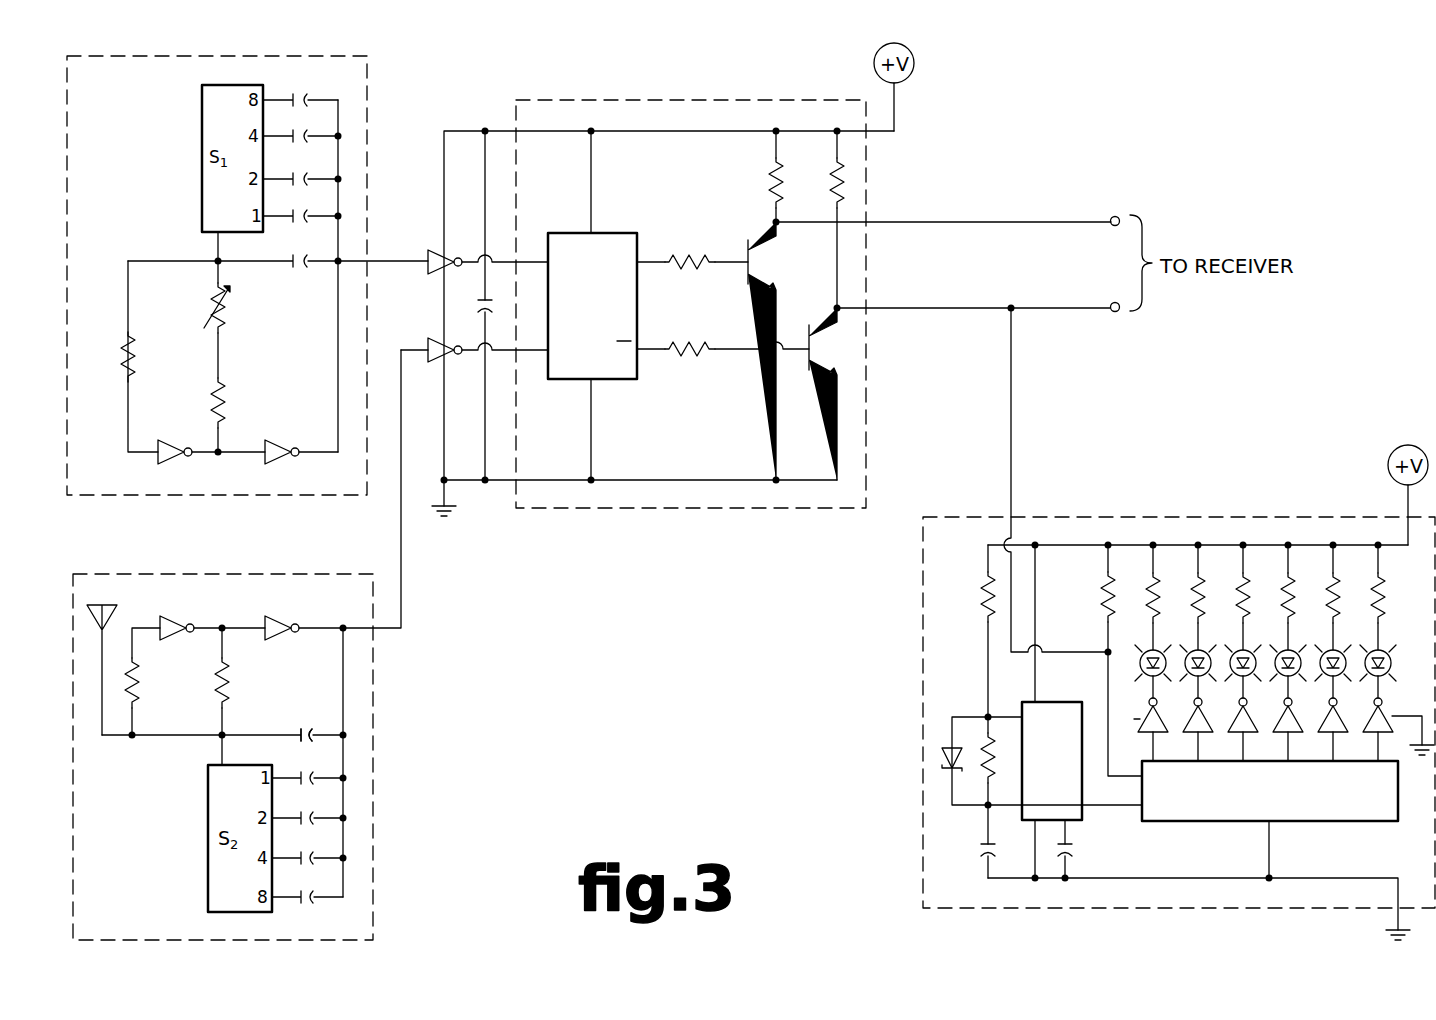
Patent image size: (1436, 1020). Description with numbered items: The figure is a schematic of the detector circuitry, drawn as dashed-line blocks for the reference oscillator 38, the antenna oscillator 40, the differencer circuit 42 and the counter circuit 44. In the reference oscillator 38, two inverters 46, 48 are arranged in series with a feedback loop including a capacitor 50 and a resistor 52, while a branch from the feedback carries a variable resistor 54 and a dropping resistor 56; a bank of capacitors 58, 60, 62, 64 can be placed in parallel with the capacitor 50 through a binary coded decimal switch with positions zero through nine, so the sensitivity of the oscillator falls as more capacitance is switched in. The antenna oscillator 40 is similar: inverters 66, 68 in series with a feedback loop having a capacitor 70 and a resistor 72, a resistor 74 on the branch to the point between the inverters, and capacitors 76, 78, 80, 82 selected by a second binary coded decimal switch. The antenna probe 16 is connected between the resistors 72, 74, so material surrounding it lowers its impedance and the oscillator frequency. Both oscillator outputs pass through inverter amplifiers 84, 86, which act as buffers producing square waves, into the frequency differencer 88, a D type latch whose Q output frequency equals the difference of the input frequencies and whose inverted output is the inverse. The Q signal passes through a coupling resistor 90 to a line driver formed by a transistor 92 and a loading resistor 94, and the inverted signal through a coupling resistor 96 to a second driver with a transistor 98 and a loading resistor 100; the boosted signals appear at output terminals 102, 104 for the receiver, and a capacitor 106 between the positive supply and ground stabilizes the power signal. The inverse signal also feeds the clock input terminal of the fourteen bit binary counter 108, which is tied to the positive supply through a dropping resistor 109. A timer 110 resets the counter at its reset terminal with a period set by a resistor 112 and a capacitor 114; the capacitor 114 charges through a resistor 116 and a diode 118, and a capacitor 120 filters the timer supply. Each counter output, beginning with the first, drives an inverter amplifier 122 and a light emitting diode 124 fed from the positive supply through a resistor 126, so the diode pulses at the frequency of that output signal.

The antenna probe 16 is at (112, 616).
The reference oscillator 38 is at (367, 100).
The antenna oscillator 40 is at (376, 894).
The differencer circuit 42 is at (702, 508).
The counter circuit 44 is at (922, 630).
The inverter 46 is at (164, 446).
The inverter 48 is at (283, 444).
The capacitor 50 is at (306, 269).
The resistor 52 is at (130, 355).
The variable resistor 54 is at (224, 311).
The dropping resistor 56 is at (221, 391).
The capacitor 58 is at (306, 222).
The capacitor 60 is at (310, 180).
The capacitor 62 is at (310, 138).
The capacitor 64 is at (307, 96).
The inverter 66 is at (182, 638).
The inverter 68 is at (284, 638).
The capacitor 70 is at (314, 726).
The resistor 72 is at (138, 684).
The resistor 74 is at (222, 684).
The capacitor 76 is at (316, 780).
The capacitor 78 is at (316, 820).
The capacitor 80 is at (316, 859).
The capacitor 82 is at (318, 900).
The inverter amplifier 84 is at (428, 250).
The inverter amplifier 86 is at (430, 340).
The frequency differencer 88 is at (610, 233).
The coupling resistor 90 is at (686, 260).
The transistor 92 is at (738, 280).
The loading resistor 94 is at (760, 174).
The coupling resistor 96 is at (702, 362).
The transistor 98 is at (812, 366).
The loading resistor 100 is at (834, 172).
The output terminal 102 is at (1110, 224).
The output terminal 104 is at (1112, 304).
The capacitor 106 is at (480, 300).
The binary counter 108 is at (1366, 822).
The dropping resistor 109 is at (1114, 572).
The timer 110 is at (1046, 700).
The resistor 112 is at (984, 724).
The capacitor 114 is at (982, 844).
The resistor 116 is at (986, 614).
The diode 118 is at (938, 758).
The capacitor 120 is at (1072, 842).
The inverter amplifier 122 is at (1142, 708).
The light emitting diode 124 is at (1140, 658).
The resistor 126 is at (1158, 570).